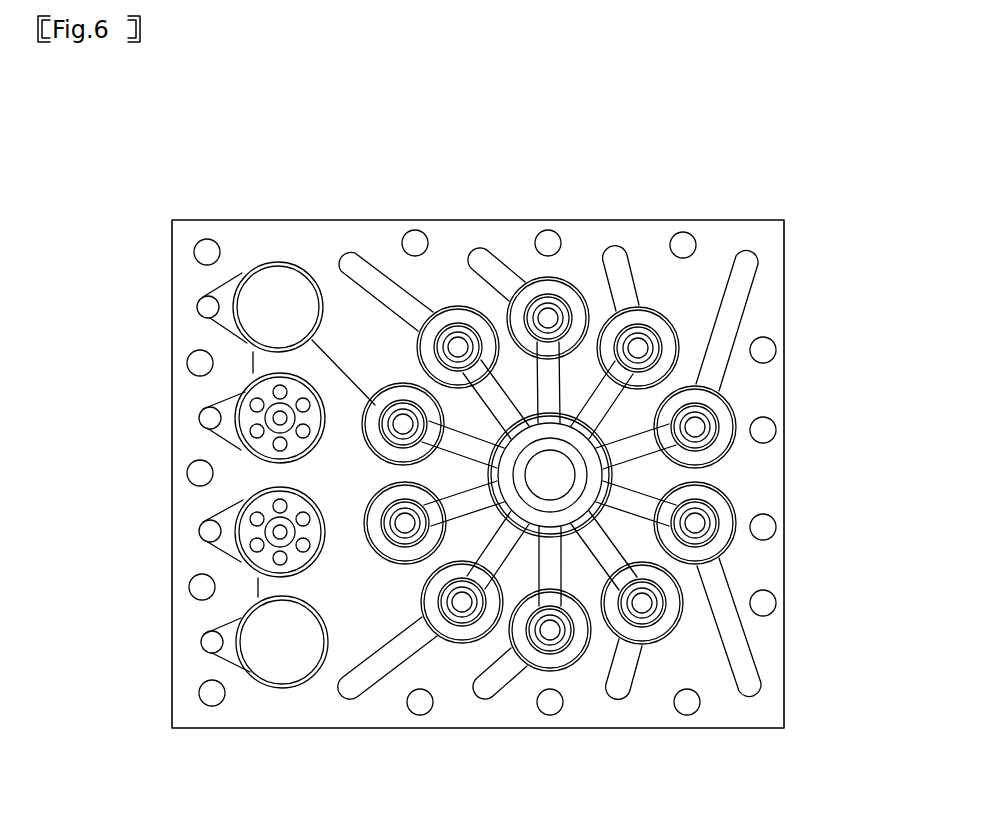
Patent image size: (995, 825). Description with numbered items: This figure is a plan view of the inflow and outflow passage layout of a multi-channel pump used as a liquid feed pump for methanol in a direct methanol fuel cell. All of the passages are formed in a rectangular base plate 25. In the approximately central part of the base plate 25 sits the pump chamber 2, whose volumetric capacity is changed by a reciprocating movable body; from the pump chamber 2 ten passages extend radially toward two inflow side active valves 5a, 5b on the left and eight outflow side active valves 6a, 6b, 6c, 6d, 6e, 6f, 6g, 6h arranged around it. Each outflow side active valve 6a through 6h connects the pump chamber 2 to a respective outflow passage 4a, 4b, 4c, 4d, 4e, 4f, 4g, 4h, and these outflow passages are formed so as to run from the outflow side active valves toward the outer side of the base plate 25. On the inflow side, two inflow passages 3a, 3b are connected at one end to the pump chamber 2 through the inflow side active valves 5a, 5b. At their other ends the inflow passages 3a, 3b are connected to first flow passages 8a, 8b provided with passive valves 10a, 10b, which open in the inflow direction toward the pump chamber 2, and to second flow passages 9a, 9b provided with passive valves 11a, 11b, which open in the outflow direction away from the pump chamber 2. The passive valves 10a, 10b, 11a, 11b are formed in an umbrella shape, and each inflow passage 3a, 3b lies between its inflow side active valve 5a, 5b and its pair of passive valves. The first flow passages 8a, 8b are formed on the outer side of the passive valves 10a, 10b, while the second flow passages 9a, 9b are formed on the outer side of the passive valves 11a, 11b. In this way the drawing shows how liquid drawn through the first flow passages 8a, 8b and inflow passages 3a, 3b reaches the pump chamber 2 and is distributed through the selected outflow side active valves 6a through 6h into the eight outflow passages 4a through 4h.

The pump chamber 2 is at (593, 480).
The base plate 25 is at (784, 236).
The inflow passage 3a is at (337, 603).
The inflow passage 3b is at (323, 350).
The outflow passage 4a is at (730, 312).
The outflow passage 4b is at (737, 648).
The outflow passage 4c is at (627, 660).
The outflow passage 4d is at (505, 675).
The outflow passage 4e is at (398, 650).
The outflow passage 4f is at (380, 287).
The outflow passage 4g is at (500, 278).
The outflow passage 4h is at (620, 303).
The inflow side active valve 5a is at (405, 523).
The inflow side active valve 5b is at (403, 424).
The outflow side active valve 6a is at (695, 427).
The outflow side active valve 6b is at (695, 523).
The outflow side active valve 6c is at (642, 603).
The outflow side active valve 6d is at (550, 632).
The outflow side active valve 6e is at (458, 602).
The outflow side active valve 6f is at (456, 347).
The outflow side active valve 6g is at (548, 318).
The outflow side active valve 6h is at (640, 347).
The first flow passage 8a is at (210, 531).
The first flow passage 8b is at (205, 412).
The second flow passage 9a is at (208, 640).
The second flow passage 9b is at (205, 302).
The passive valve 10a is at (243, 540).
The passive valve 10b is at (248, 392).
The passive valve 11a is at (240, 655).
The passive valve 11b is at (260, 290).